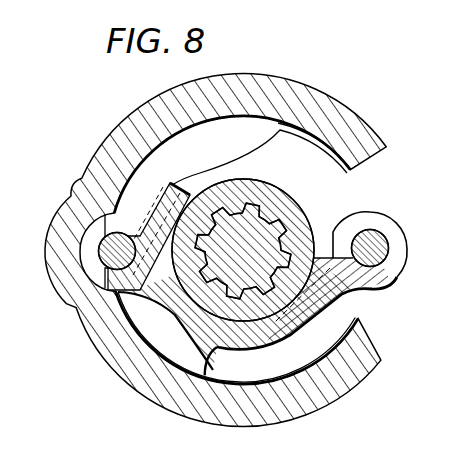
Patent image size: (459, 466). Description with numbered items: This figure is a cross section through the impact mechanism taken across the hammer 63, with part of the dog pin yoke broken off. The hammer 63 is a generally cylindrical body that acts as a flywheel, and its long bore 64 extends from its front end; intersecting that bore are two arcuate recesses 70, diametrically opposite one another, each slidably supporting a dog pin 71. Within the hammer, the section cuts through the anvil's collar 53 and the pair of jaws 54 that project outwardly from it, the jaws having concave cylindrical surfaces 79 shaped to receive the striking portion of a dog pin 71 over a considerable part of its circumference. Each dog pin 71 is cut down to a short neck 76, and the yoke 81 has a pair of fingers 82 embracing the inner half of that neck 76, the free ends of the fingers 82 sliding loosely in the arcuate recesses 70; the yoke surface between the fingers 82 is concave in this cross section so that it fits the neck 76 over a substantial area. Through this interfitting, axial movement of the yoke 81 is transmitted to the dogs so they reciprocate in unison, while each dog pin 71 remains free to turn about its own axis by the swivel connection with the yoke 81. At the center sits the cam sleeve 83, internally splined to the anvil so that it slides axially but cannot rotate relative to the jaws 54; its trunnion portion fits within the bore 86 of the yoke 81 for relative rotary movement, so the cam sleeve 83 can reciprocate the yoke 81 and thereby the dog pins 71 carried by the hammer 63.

The collar 53 is at (198, 178).
The jaws 54 is at (364, 192).
The hammer 63 is at (340, 101).
The bore 64 is at (336, 350).
The arcuate recesses 70 is at (92, 268).
The dog pin 71 is at (381, 216).
The short neck 76 is at (131, 222).
The concave cylindrical surfaces 79 is at (279, 131).
The yoke 81 is at (254, 350).
The fingers 82 is at (108, 293).
The cam sleeve 83 is at (266, 186).
The bore 86 is at (314, 243).